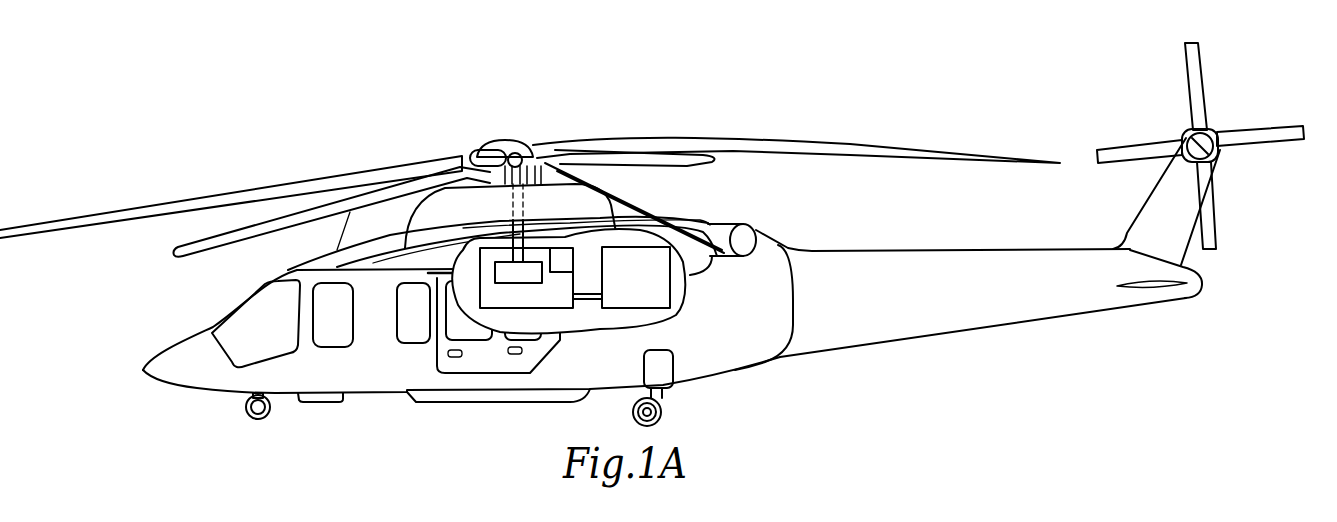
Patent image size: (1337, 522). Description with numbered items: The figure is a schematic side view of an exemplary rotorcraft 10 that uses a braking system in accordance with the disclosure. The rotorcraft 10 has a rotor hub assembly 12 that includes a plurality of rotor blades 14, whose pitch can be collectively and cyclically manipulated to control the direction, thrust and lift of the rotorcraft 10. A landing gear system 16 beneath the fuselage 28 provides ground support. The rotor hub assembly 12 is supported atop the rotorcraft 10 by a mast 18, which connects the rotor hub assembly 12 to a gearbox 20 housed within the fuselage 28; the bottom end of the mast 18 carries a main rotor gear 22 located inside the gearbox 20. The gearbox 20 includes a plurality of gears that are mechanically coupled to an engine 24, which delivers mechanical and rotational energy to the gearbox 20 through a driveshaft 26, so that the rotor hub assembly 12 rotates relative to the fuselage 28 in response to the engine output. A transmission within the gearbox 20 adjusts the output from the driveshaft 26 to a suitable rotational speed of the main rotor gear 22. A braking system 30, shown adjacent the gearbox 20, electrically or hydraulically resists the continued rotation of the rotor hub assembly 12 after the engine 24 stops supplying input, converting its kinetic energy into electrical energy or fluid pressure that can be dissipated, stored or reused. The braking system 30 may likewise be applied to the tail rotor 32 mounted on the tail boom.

The rotorcraft 10 is at (343, 150).
The rotor hub assembly 12 is at (501, 135).
The rotor blades 14 is at (820, 145).
The landing gear system 16 is at (674, 420).
The mast 18 is at (523, 205).
The gearbox 20 is at (502, 300).
The main rotor gear 22 is at (516, 275).
The engine 24 is at (636, 277).
The driveshaft 26 is at (585, 302).
The fuselage 28 is at (177, 377).
The braking system 30 is at (570, 258).
The tail rotor 32 is at (1208, 133).